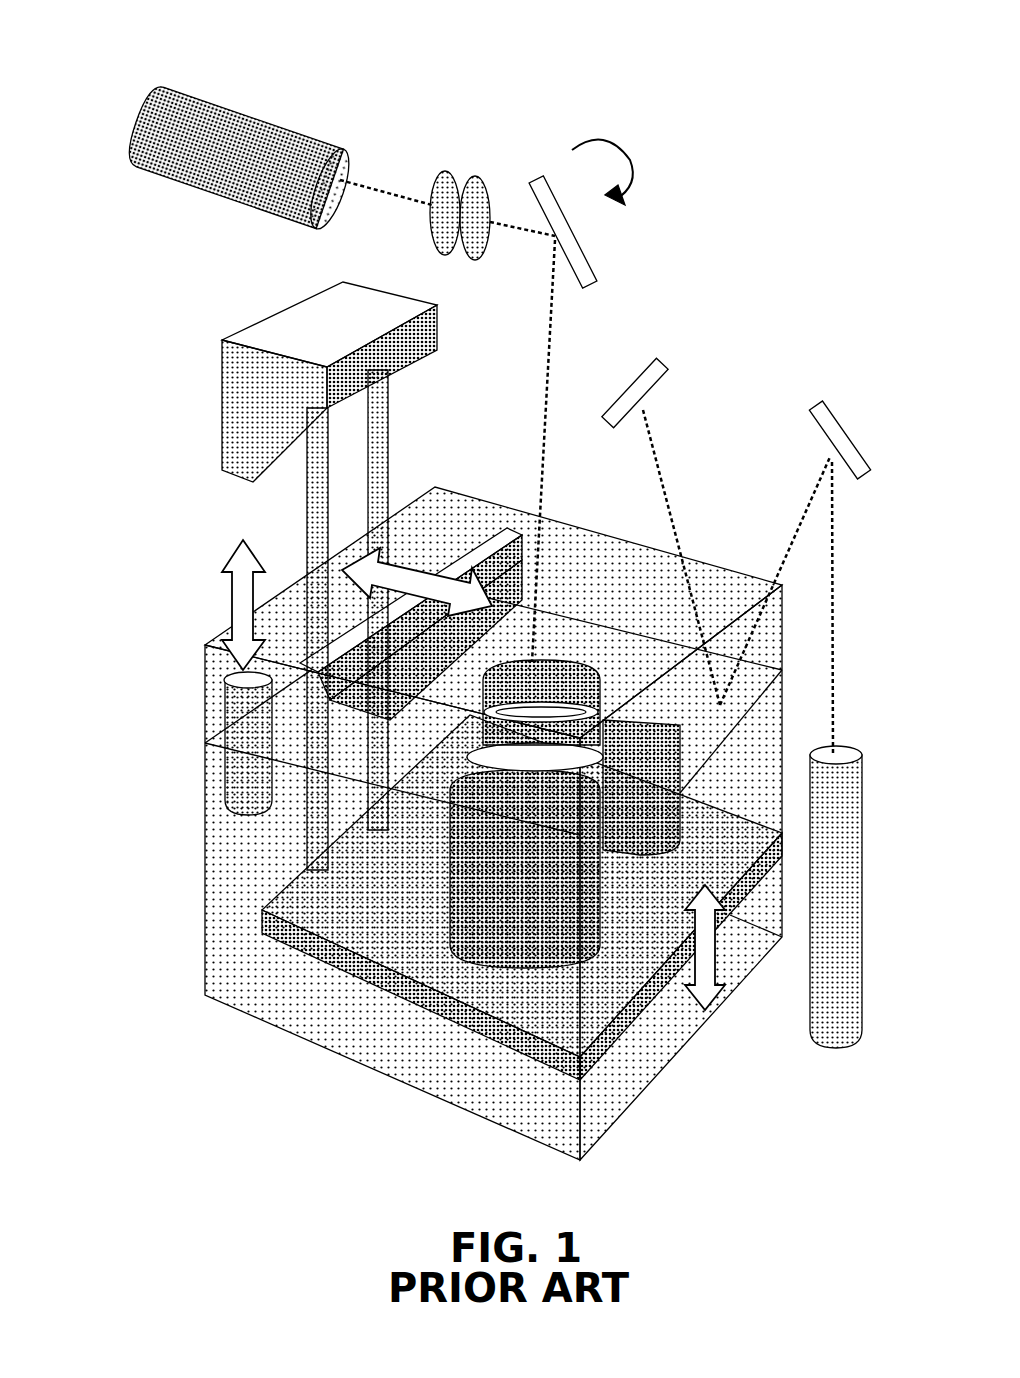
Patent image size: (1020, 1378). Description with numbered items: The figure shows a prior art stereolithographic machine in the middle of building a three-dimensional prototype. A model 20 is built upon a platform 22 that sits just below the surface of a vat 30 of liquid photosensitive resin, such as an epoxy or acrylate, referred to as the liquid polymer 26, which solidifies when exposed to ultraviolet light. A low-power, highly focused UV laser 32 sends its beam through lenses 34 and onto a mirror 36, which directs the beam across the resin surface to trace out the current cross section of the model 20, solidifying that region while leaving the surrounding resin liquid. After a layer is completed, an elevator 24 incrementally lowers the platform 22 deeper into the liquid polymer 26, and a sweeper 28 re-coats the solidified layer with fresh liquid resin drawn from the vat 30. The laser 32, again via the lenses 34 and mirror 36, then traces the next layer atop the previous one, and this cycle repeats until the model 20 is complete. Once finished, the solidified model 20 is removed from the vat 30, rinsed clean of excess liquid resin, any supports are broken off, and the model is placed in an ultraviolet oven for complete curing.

The model 20 is at (560, 662).
The platform 22 is at (422, 1008).
The elevator 24 is at (212, 398).
The liquid polymer 26 is at (202, 918).
The sweeper 28 is at (480, 522).
The vat 30 is at (195, 748).
The laser 32 is at (232, 108).
The lenses 34 is at (465, 165).
The mirror 36 is at (592, 262).